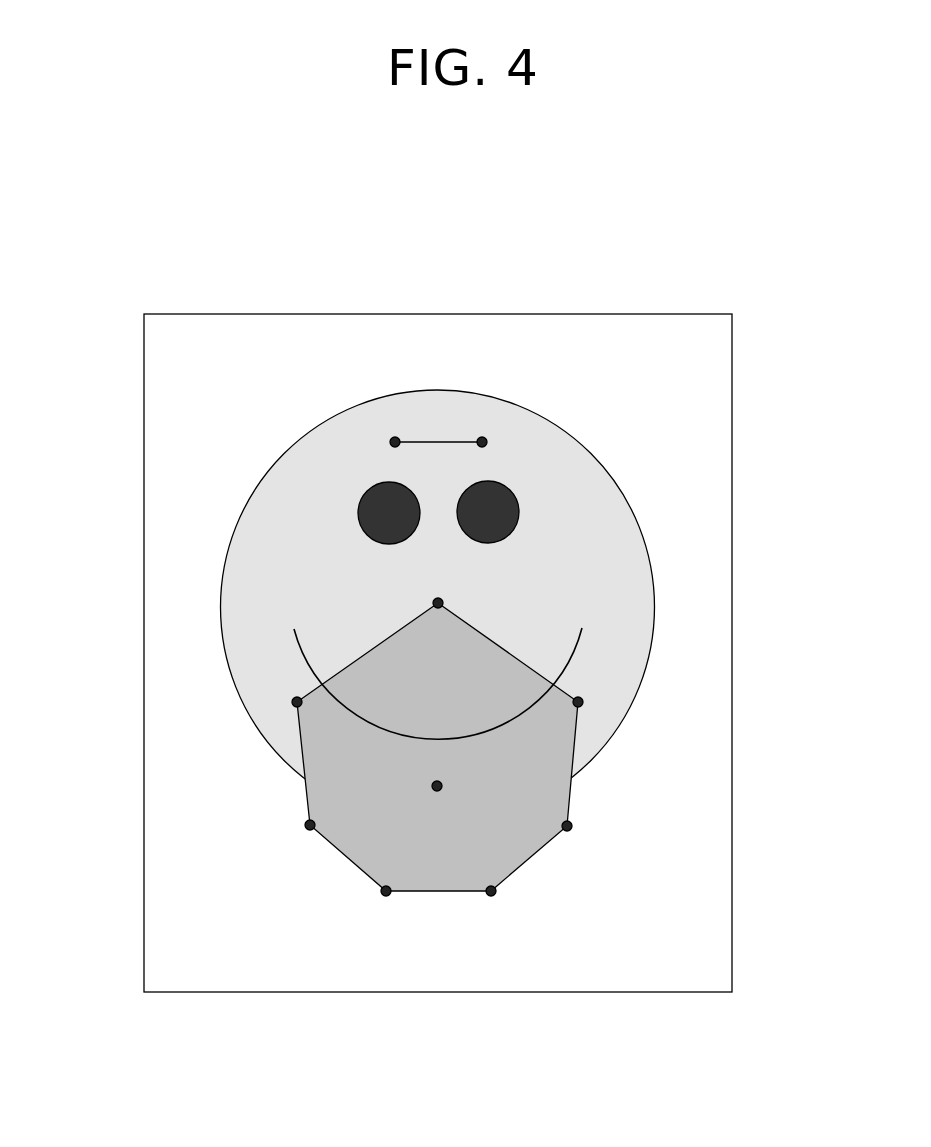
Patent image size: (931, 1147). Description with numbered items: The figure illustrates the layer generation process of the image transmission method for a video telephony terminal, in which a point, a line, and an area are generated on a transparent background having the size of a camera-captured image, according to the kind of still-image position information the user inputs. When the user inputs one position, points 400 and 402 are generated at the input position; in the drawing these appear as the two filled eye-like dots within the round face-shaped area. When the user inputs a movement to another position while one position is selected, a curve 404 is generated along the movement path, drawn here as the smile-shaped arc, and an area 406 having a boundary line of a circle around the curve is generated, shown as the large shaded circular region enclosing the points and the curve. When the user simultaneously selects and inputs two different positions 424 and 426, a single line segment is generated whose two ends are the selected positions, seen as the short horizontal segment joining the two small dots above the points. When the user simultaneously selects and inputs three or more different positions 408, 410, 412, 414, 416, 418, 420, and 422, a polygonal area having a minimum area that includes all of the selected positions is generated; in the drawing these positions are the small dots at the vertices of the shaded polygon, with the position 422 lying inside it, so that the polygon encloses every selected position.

The point 400 is at (357, 522).
The point 402 is at (519, 508).
The curve 404 is at (473, 742).
The area 406 is at (438, 390).
The selected position 408 is at (441, 601).
The selected position 410 is at (580, 703).
The selected position 412 is at (569, 827).
The selected position 414 is at (492, 894).
The selected position 416 is at (385, 894).
The selected position 418 is at (308, 825).
The selected position 420 is at (296, 703).
The selected position 422 is at (436, 785).
The selected position 424 is at (393, 440).
The selected position 426 is at (484, 440).